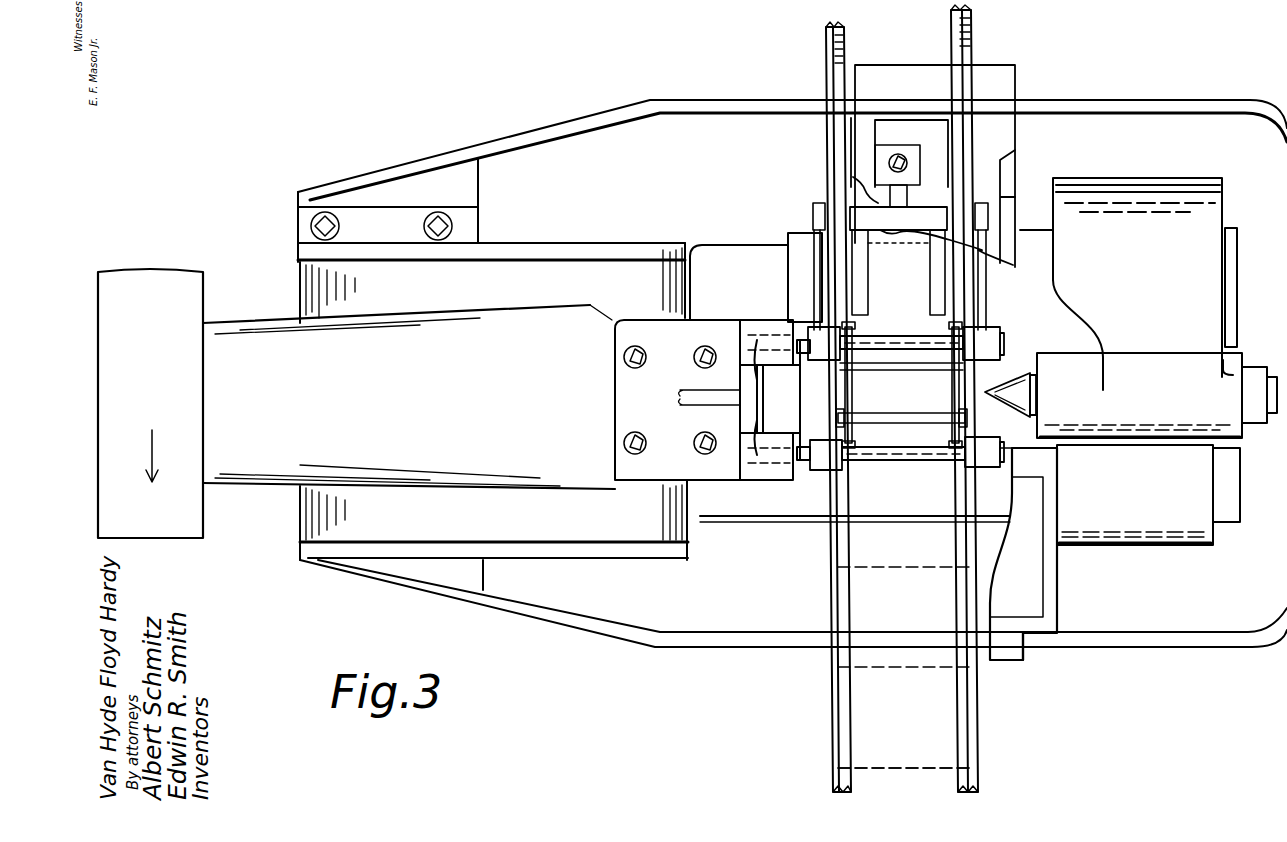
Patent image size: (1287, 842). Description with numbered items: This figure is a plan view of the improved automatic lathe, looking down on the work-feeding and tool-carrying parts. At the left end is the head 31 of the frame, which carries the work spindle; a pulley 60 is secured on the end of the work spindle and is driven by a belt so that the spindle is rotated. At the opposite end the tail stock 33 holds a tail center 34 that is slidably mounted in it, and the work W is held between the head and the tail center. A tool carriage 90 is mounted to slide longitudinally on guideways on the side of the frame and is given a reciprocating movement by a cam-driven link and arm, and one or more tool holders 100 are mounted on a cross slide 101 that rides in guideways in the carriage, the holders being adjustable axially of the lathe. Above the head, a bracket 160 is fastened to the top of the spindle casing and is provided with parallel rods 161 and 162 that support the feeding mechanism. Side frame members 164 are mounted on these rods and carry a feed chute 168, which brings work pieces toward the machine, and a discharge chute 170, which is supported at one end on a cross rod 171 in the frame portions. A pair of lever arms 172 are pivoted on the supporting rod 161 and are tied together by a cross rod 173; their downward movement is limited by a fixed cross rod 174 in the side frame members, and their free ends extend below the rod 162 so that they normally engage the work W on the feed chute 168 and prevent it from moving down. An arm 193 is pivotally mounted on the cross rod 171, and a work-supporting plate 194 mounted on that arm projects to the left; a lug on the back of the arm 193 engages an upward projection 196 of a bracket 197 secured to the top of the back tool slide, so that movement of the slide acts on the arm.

The pulley 60 is at (176, 272).
The head 31 is at (236, 333).
The bracket 160 is at (704, 328).
The rod 161 is at (898, 339).
The rod 162 is at (897, 465).
The side frame members 164 is at (820, 288).
The feed chute 168 is at (830, 697).
The discharge chute 170 is at (826, 45).
The cross rod 171 is at (813, 215).
The lever arms 172 is at (846, 385).
The cross rod 173 is at (911, 419).
The cross rod 174 is at (910, 370).
The arm 193 is at (870, 263).
The work-supporting plate 194 is at (931, 279).
The upward projection 196 is at (912, 190).
The bracket 197 is at (902, 149).
The tail center 34 is at (1020, 384).
The tail stock 33 is at (1157, 395).
The tool carriage 90 is at (1171, 539).
The tool holders 100 is at (1032, 565).
The cross slide 101 is at (1052, 610).
The work W is at (887, 772).